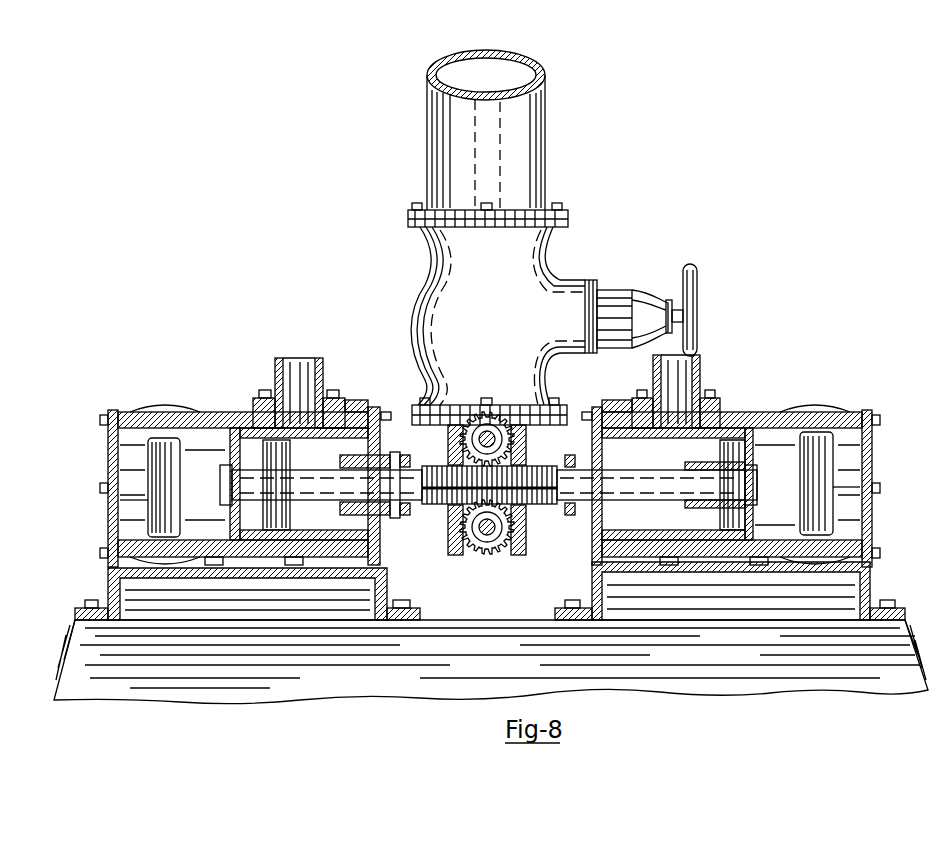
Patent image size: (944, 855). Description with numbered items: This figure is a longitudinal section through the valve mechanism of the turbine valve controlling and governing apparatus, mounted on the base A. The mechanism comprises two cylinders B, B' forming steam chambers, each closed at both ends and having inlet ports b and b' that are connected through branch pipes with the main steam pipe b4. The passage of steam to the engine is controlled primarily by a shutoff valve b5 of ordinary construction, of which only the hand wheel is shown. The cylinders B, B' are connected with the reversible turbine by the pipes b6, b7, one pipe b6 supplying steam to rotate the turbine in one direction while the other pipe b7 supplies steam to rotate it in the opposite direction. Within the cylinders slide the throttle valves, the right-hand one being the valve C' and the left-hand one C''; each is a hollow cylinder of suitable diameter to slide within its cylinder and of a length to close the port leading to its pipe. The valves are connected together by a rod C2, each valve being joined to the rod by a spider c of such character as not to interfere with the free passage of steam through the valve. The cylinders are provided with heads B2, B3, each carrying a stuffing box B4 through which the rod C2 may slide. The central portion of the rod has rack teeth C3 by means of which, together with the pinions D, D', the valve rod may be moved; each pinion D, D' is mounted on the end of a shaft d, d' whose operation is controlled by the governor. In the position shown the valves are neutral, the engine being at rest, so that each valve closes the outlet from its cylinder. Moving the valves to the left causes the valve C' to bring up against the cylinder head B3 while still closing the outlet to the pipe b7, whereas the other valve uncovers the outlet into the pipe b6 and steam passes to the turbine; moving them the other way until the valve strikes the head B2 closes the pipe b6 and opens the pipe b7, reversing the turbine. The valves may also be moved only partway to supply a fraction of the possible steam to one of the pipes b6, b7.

The base A is at (491, 662).
The cylinder B is at (234, 474).
The cylinder B' is at (741, 473).
The cylinder head B2 is at (374, 405).
The cylinder head B3 is at (596, 405).
The stuffing box B4 is at (590, 444).
The inlet port b is at (105, 511).
The inlet port b' is at (869, 493).
The main steam pipe b4 is at (496, 237).
The shutoff valve b5 is at (618, 290).
The pipe b6 is at (300, 350).
The pipe b7 is at (700, 360).
The sliding throttle valve C' is at (201, 487).
The right piston C'' is at (794, 483).
The rod C2 is at (420, 503).
The rack teeth C3 is at (550, 503).
The spider c is at (310, 512).
The pinion D is at (487, 541).
The pinion D' is at (490, 419).
The shaft d is at (489, 524).
The shaft d' is at (472, 414).